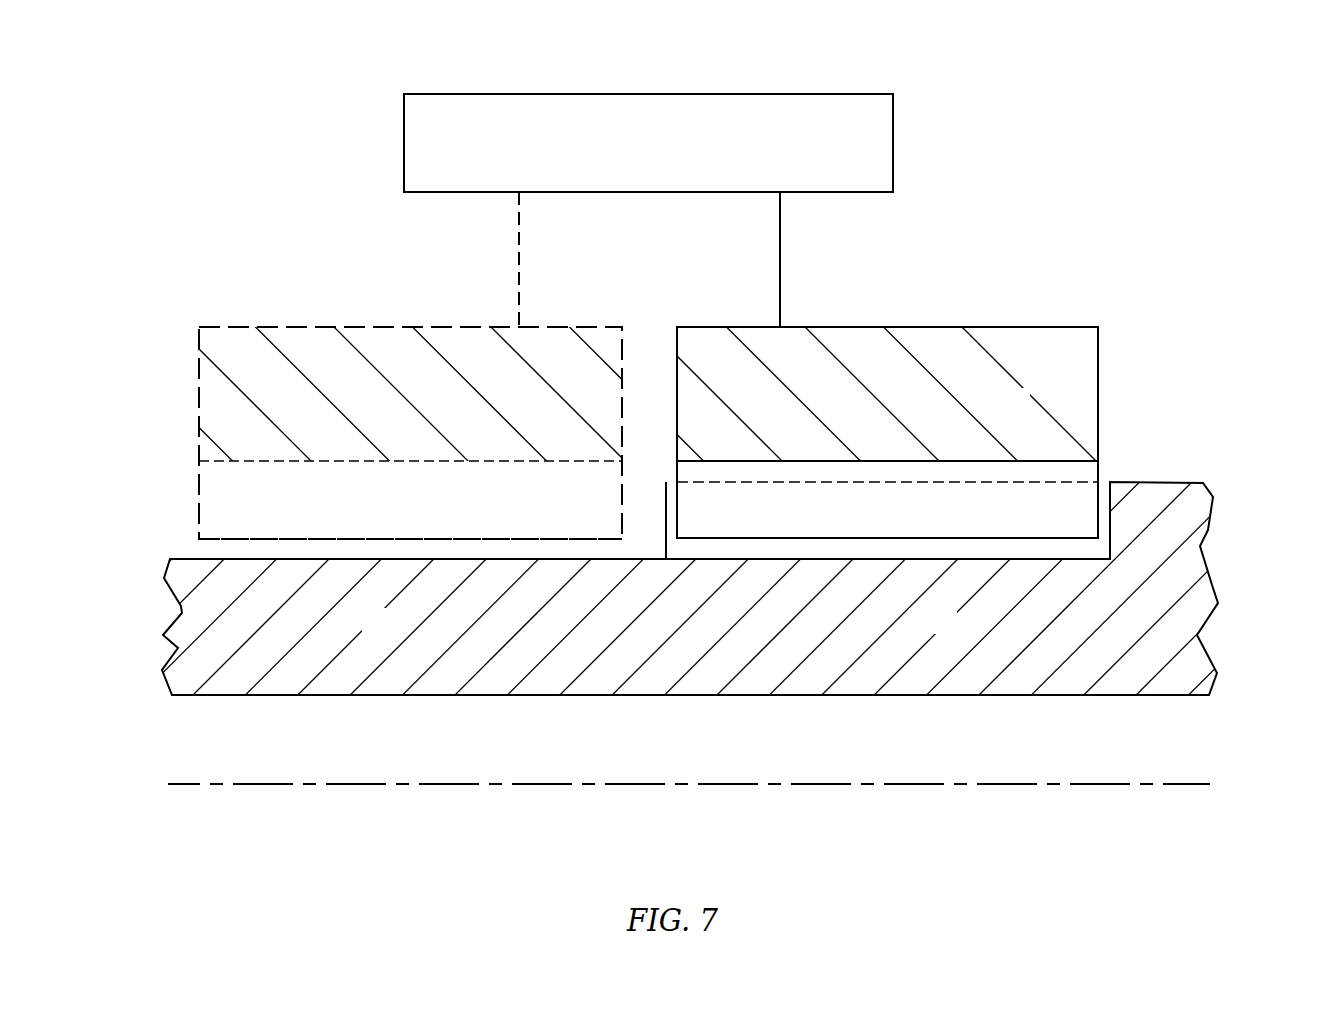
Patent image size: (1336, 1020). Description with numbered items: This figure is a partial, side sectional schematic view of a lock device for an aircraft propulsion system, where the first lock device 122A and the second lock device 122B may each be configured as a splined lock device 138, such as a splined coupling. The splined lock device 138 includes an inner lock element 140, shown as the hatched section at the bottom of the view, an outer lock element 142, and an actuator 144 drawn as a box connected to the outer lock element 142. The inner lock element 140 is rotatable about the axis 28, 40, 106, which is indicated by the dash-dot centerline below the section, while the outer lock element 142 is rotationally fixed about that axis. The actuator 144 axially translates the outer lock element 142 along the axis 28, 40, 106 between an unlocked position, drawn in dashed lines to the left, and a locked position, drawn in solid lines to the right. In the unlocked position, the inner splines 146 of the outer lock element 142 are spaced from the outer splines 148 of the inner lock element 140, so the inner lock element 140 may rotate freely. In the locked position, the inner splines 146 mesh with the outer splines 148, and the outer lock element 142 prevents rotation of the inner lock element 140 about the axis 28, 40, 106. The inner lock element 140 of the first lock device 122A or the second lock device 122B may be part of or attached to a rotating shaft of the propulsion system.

The first lock device 122A is at (613, 316).
The second lock device 122B is at (613, 316).
The splined lock device 138 is at (613, 316).
The inner lock element 140 is at (1218, 577).
The outer lock element 142 is at (188, 418).
The actuator 144 is at (903, 154).
The inner splines 146 is at (398, 540).
The outer splines 148 is at (987, 482).
The axis 28 is at (699, 833).
The axis 40 is at (699, 833).
The axis 106 is at (1192, 784).